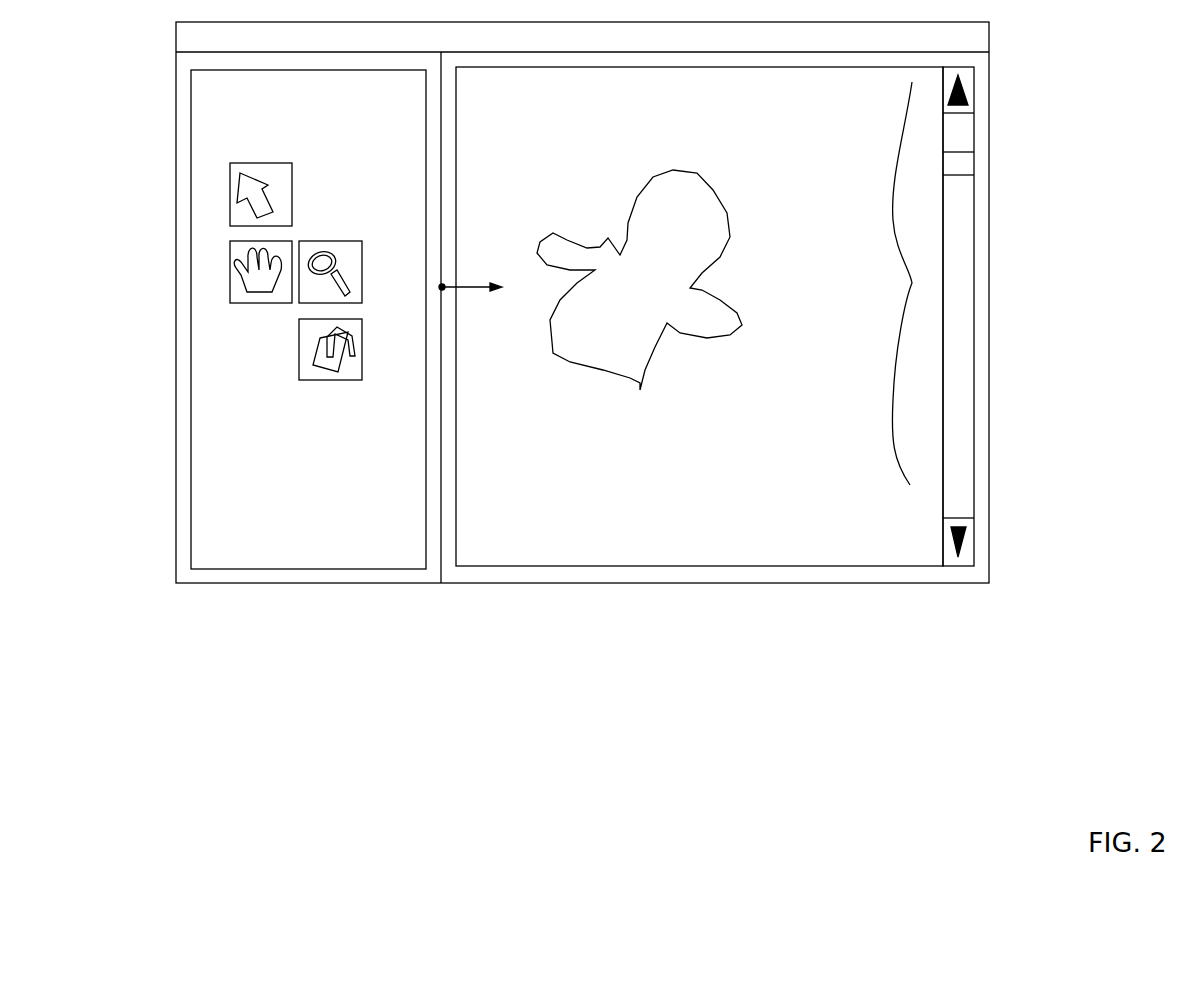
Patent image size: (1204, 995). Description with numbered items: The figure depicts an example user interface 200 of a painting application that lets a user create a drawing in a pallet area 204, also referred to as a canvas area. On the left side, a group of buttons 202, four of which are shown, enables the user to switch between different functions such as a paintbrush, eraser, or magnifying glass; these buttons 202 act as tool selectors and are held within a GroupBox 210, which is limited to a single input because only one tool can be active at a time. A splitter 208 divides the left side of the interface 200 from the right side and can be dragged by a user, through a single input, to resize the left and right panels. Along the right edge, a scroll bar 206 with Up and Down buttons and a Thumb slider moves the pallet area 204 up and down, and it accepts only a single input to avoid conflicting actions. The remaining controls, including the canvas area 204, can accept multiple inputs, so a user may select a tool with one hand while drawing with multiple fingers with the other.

The user interface 200 is at (486, 692).
The buttons 202 is at (378, 398).
The pallet area 204 is at (660, 535).
The scroll bar 206 is at (910, 282).
The splitter 208 is at (436, 576).
The GroupBox 210 is at (426, 350).